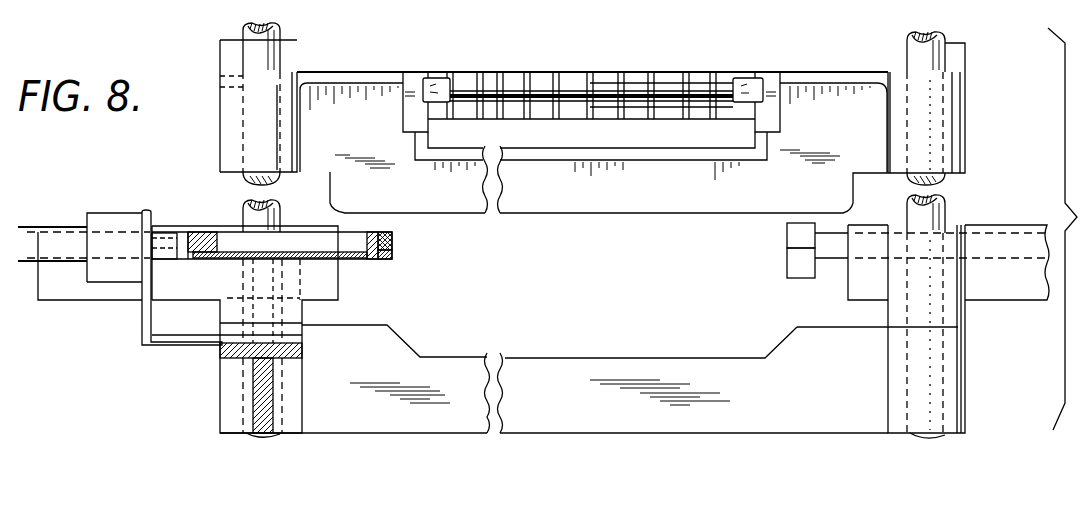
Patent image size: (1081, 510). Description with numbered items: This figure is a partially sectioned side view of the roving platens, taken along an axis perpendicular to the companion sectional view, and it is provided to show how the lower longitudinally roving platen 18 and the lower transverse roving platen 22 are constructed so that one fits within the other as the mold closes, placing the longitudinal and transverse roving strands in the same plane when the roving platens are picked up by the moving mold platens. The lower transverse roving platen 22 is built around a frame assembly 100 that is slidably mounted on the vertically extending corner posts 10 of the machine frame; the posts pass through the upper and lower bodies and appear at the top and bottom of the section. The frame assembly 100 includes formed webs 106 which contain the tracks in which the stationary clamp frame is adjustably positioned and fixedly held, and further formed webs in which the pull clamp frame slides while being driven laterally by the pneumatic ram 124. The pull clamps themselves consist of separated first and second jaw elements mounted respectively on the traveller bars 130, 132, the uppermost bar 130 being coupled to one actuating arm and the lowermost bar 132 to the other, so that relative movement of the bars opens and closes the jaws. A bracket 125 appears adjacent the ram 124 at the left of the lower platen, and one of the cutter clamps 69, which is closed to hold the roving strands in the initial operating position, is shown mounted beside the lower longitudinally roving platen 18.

The corner post 10 is at (945, 35).
The lower transverse roving platen 22 is at (965, 125).
The formed web 106 is at (818, 72).
The lower longitudinally roving platen 18 is at (965, 317).
The cutter clamp 69 is at (798, 268).
The pneumatic ram 124 is at (113, 217).
The bracket 125 is at (153, 215).
The traveller bar 130 is at (393, 240).
The traveller bar 132 is at (395, 252).
The frame assembly 100 is at (193, 377).